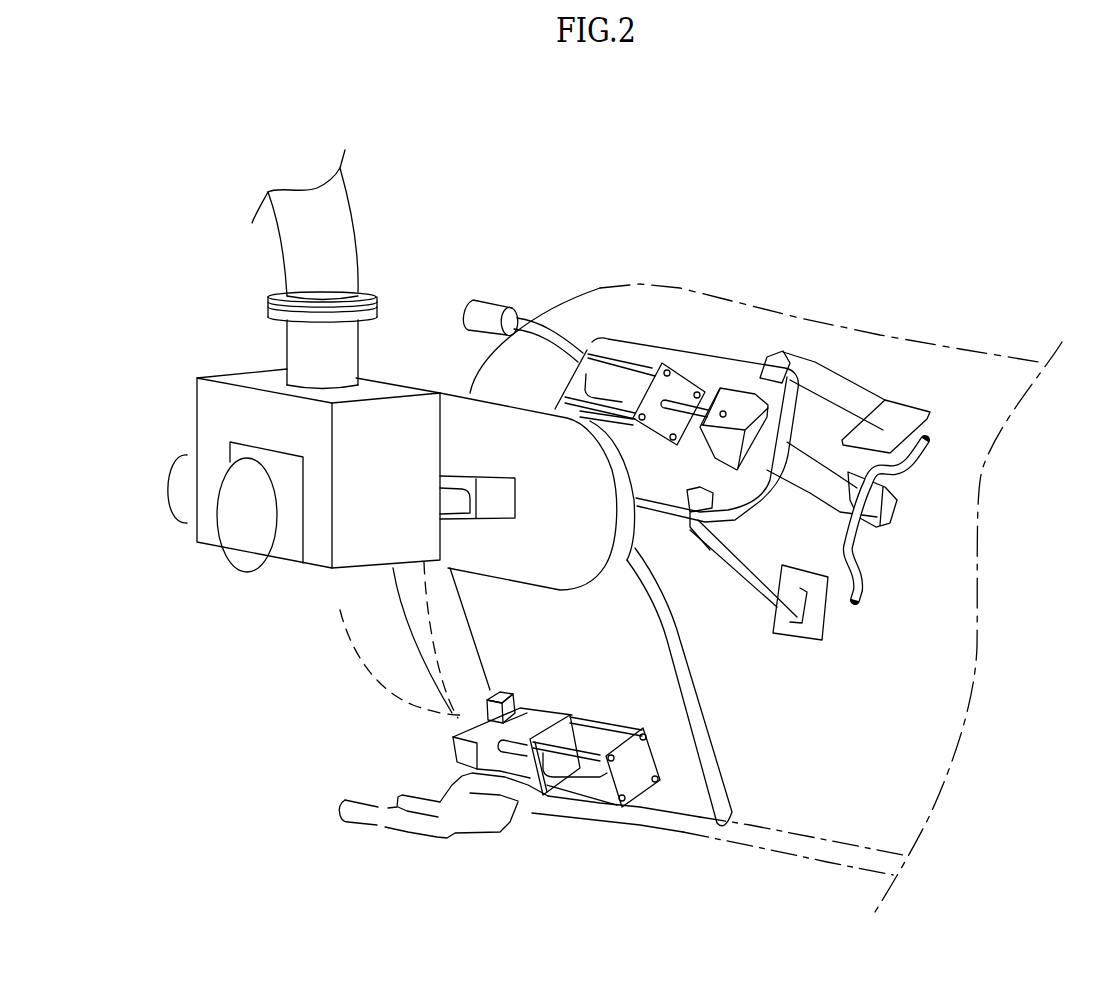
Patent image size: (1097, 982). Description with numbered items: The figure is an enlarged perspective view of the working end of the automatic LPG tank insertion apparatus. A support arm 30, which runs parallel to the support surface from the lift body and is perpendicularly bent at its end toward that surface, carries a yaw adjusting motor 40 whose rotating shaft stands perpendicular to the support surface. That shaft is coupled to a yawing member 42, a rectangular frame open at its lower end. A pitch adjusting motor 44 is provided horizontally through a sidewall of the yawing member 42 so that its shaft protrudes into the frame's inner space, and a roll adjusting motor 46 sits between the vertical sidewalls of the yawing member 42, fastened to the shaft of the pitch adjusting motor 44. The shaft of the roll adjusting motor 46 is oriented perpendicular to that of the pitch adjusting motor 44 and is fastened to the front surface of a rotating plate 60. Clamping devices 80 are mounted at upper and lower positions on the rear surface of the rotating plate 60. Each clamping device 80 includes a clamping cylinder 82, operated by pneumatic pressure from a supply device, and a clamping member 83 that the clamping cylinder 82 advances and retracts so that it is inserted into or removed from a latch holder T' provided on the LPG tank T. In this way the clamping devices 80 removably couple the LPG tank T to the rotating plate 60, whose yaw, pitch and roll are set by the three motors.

The support arm 30 is at (345, 225).
The yaw adjusting motor 40 is at (295, 342).
The yawing member 42 is at (367, 537).
The pitch adjusting motor 44 is at (175, 488).
The roll adjusting motor 46 is at (243, 557).
The rotating plate 60 is at (521, 440).
The clamping device 80 is at (705, 372).
The clamping cylinder 82 is at (627, 387).
The clamping member 83 is at (820, 477).
The LPG tank T is at (703, 598).
The latch holder T' is at (997, 487).